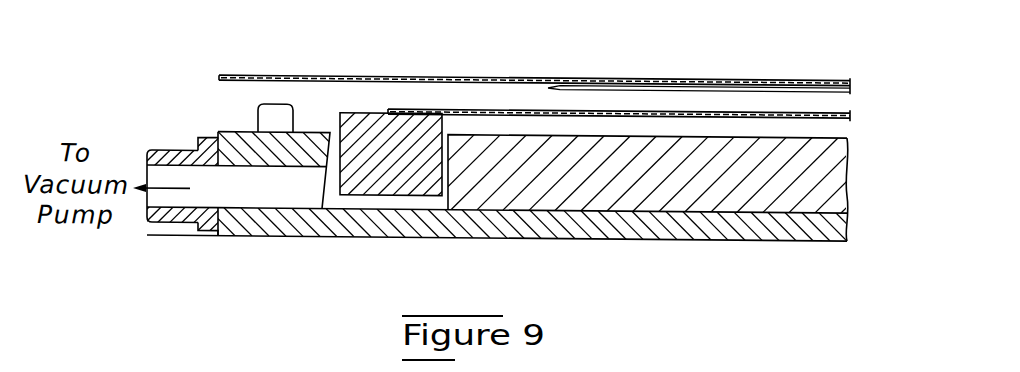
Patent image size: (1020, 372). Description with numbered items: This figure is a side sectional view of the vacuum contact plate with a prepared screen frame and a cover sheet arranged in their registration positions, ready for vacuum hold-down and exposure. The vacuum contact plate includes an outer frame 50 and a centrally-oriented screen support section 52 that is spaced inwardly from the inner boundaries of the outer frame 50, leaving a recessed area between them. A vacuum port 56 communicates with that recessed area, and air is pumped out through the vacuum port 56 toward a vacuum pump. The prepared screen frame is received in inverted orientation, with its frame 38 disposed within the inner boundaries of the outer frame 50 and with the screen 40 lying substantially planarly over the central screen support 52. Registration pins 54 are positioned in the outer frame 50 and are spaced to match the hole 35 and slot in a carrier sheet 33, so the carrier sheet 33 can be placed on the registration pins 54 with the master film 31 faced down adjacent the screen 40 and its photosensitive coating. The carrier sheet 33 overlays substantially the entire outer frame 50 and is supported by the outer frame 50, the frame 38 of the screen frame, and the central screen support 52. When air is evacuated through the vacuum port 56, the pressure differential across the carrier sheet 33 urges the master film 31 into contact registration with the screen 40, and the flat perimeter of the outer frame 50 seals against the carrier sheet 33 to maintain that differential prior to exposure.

The master film 31 is at (603, 86).
The carrier sheet 33 is at (531, 74).
The hole 35 is at (271, 75).
The frame 38 is at (424, 193).
The screen 40 is at (725, 107).
The outer frame 50 is at (314, 131).
The screen support section 52 is at (840, 190).
The registration pins 54 is at (260, 104).
The vacuum port 56 is at (147, 211).